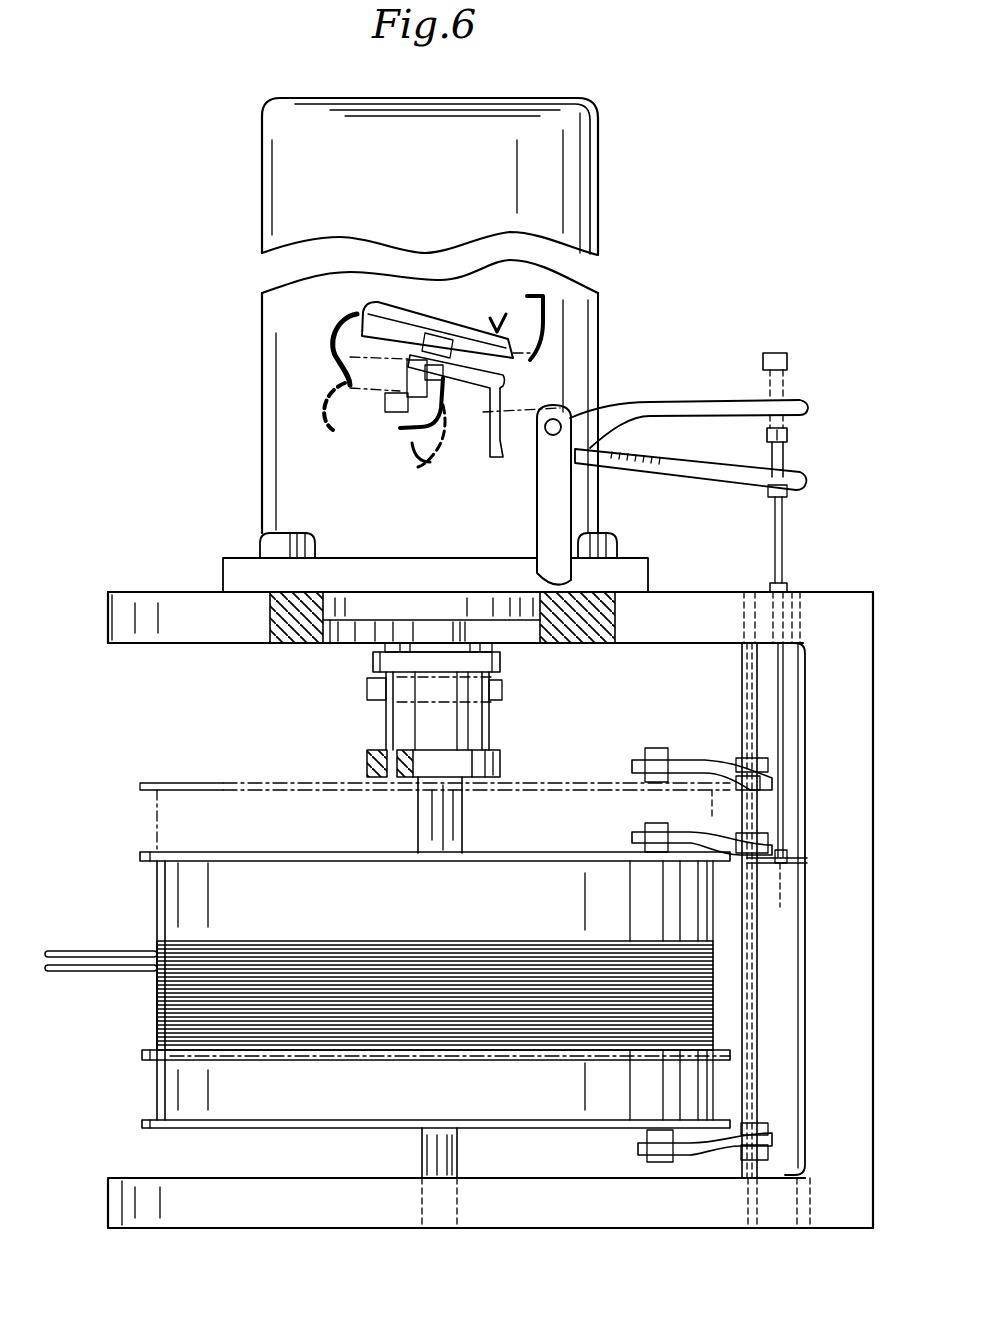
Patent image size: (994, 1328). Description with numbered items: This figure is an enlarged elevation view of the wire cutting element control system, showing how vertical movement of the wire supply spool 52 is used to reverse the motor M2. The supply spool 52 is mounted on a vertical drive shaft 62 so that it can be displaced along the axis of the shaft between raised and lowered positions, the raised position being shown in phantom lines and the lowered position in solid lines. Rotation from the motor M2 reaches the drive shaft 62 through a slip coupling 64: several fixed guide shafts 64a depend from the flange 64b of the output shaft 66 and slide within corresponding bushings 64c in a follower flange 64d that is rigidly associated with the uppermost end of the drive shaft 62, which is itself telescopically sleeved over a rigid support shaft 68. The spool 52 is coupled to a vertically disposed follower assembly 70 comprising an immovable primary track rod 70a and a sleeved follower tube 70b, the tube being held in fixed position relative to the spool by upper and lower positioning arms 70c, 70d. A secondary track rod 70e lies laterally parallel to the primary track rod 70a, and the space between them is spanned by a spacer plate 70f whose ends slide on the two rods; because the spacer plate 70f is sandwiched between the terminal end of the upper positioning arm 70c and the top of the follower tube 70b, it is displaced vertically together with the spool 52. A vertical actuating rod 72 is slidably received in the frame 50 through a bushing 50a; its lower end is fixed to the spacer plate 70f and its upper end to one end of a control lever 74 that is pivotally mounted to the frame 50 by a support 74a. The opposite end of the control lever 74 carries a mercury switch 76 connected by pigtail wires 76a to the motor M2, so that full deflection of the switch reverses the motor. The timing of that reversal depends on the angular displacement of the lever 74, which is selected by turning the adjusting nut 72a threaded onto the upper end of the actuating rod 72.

The motor M2 is at (363, 185).
The frame 50 is at (158, 600).
The bushing 50a is at (784, 585).
The supply spool 52 is at (197, 797).
The drive shaft 62 is at (462, 807).
The slip coupling 64 is at (370, 718).
The guide shafts 64a is at (367, 690).
The flange 64b is at (500, 667).
The bushings 64c is at (367, 753).
The follower flange 64d is at (502, 763).
The output shaft 66 is at (430, 623).
The support shaft 68 is at (424, 1147).
The follower assembly 70 is at (772, 967).
The primary track rod 70a is at (760, 807).
The follower tube 70b is at (758, 1047).
The upper positioning arm 70c is at (700, 827).
The lower positioning arm 70d is at (710, 1150).
The secondary track rod 70e is at (804, 660).
The spacer plate 70f is at (808, 867).
The actuating rod 72 is at (785, 523).
The adjusting nut 72a is at (788, 452).
The control lever 74 is at (600, 427).
The support 74a is at (563, 500).
The mercury switch 76 is at (422, 320).
The pigtail wires 76a is at (351, 315).